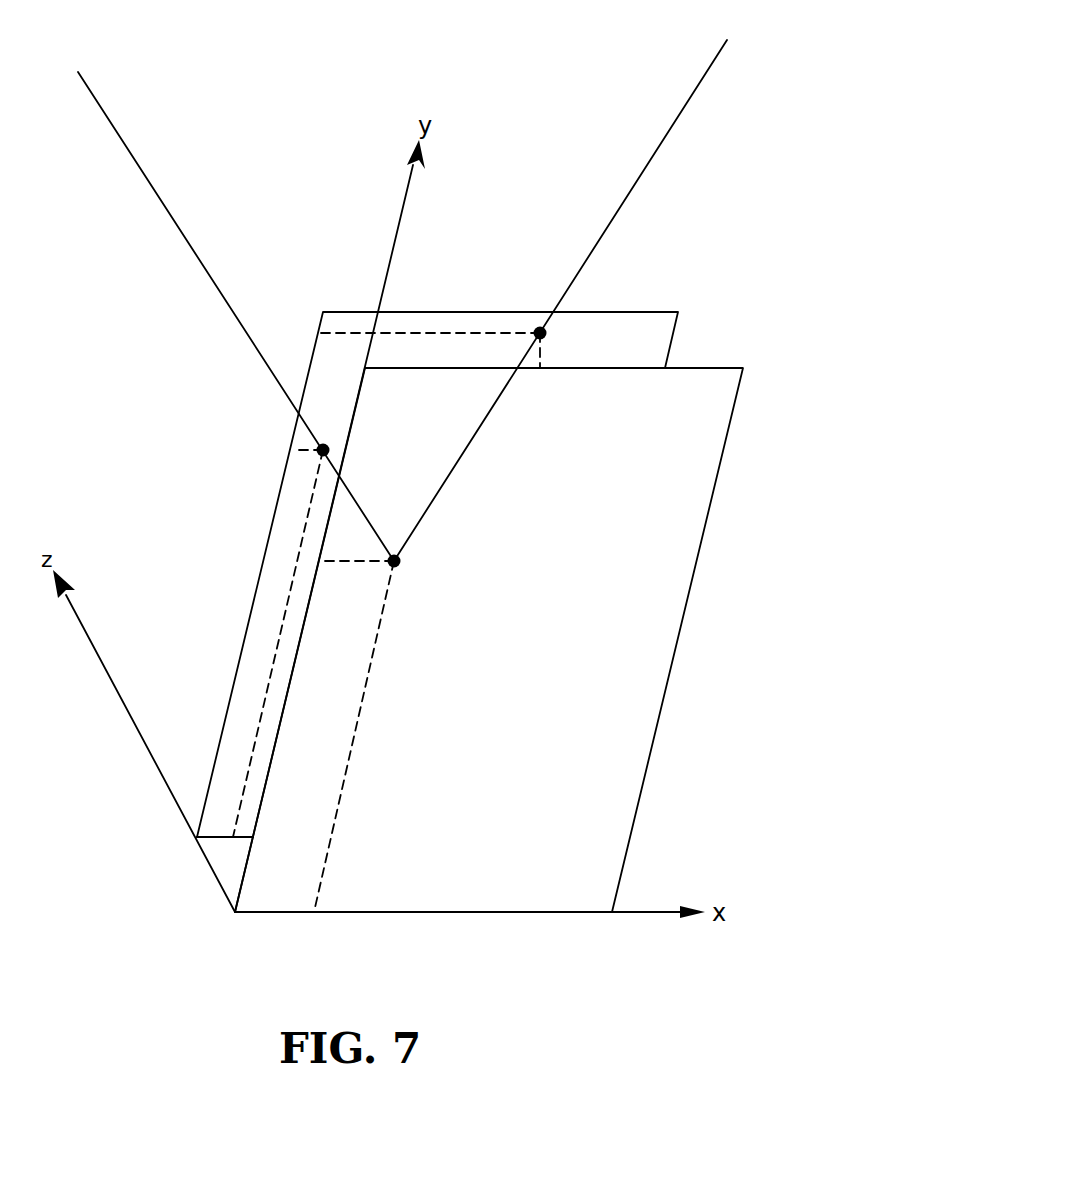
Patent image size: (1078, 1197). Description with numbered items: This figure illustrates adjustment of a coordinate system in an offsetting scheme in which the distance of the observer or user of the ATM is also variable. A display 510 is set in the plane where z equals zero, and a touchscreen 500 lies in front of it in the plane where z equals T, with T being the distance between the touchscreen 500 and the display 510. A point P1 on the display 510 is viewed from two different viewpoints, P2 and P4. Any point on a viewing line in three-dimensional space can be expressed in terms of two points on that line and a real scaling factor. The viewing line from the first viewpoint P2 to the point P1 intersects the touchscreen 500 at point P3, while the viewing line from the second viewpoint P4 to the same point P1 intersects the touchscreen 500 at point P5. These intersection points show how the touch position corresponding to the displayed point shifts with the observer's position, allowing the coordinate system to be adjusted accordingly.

The touchscreen 500 is at (672, 342).
The display 510 is at (688, 593).
The distance between the touchscreen and the display T is at (208, 847).
The point on the display P1 is at (377, 733).
The first viewpoint P2 is at (223, 302).
The intersection point of viewing line with touchscreen P3 is at (290, 623).
The second viewpoint P4 is at (573, 284).
The intersection point of viewing line with touchscreen P5 is at (453, 348).